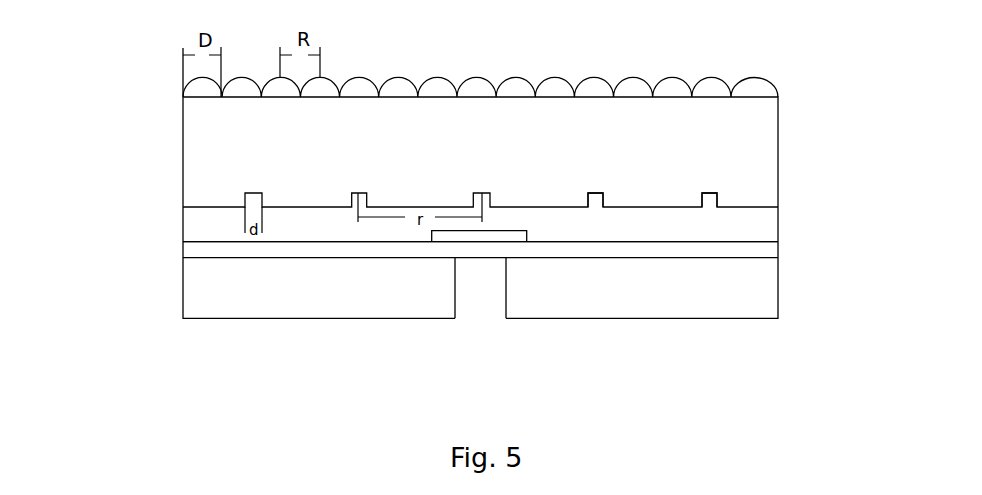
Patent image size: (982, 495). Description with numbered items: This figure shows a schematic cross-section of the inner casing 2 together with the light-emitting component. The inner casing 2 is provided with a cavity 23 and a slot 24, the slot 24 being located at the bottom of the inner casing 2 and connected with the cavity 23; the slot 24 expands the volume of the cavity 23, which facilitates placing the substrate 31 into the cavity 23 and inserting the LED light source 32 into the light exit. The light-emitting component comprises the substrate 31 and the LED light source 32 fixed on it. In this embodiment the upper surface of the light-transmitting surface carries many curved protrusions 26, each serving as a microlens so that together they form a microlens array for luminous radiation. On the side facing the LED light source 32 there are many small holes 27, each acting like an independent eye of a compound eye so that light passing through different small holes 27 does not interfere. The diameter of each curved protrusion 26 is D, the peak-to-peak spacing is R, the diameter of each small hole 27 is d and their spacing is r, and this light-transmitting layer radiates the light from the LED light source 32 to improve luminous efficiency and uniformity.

The inner casing 2 is at (183, 153).
The cavity 23 is at (190, 228).
The slot 24 is at (479, 305).
The curved protrusions 26 is at (753, 88).
The small holes 27 is at (710, 197).
The substrate 31 is at (187, 248).
The LED light source 32 is at (517, 240).